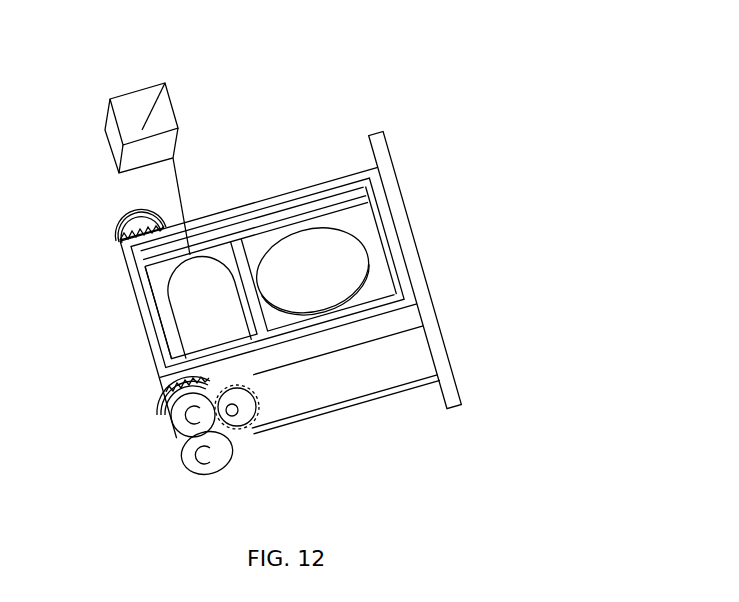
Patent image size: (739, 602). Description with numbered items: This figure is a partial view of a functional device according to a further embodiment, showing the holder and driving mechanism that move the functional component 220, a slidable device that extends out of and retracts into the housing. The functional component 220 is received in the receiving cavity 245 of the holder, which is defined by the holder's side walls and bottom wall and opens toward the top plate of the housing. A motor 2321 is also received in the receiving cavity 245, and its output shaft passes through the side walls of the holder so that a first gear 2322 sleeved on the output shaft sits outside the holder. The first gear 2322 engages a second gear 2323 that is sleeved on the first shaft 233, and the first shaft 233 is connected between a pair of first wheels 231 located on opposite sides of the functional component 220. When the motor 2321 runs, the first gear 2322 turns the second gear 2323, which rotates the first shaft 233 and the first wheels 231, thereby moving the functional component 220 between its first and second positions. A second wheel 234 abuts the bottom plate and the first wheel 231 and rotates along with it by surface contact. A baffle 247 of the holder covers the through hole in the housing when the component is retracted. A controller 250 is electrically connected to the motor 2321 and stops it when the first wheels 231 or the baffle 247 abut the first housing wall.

The controller 250 is at (165, 83).
The motor 2321 is at (300, 192).
The receiving cavity 245 is at (353, 217).
The functional component 220 is at (342, 267).
The baffle 247 is at (428, 293).
The first wheel 231 is at (120, 236).
The first shaft 233 is at (170, 318).
The second gear 2323 is at (170, 398).
The second wheel 234 is at (190, 467).
The first gear 2322 is at (253, 425).